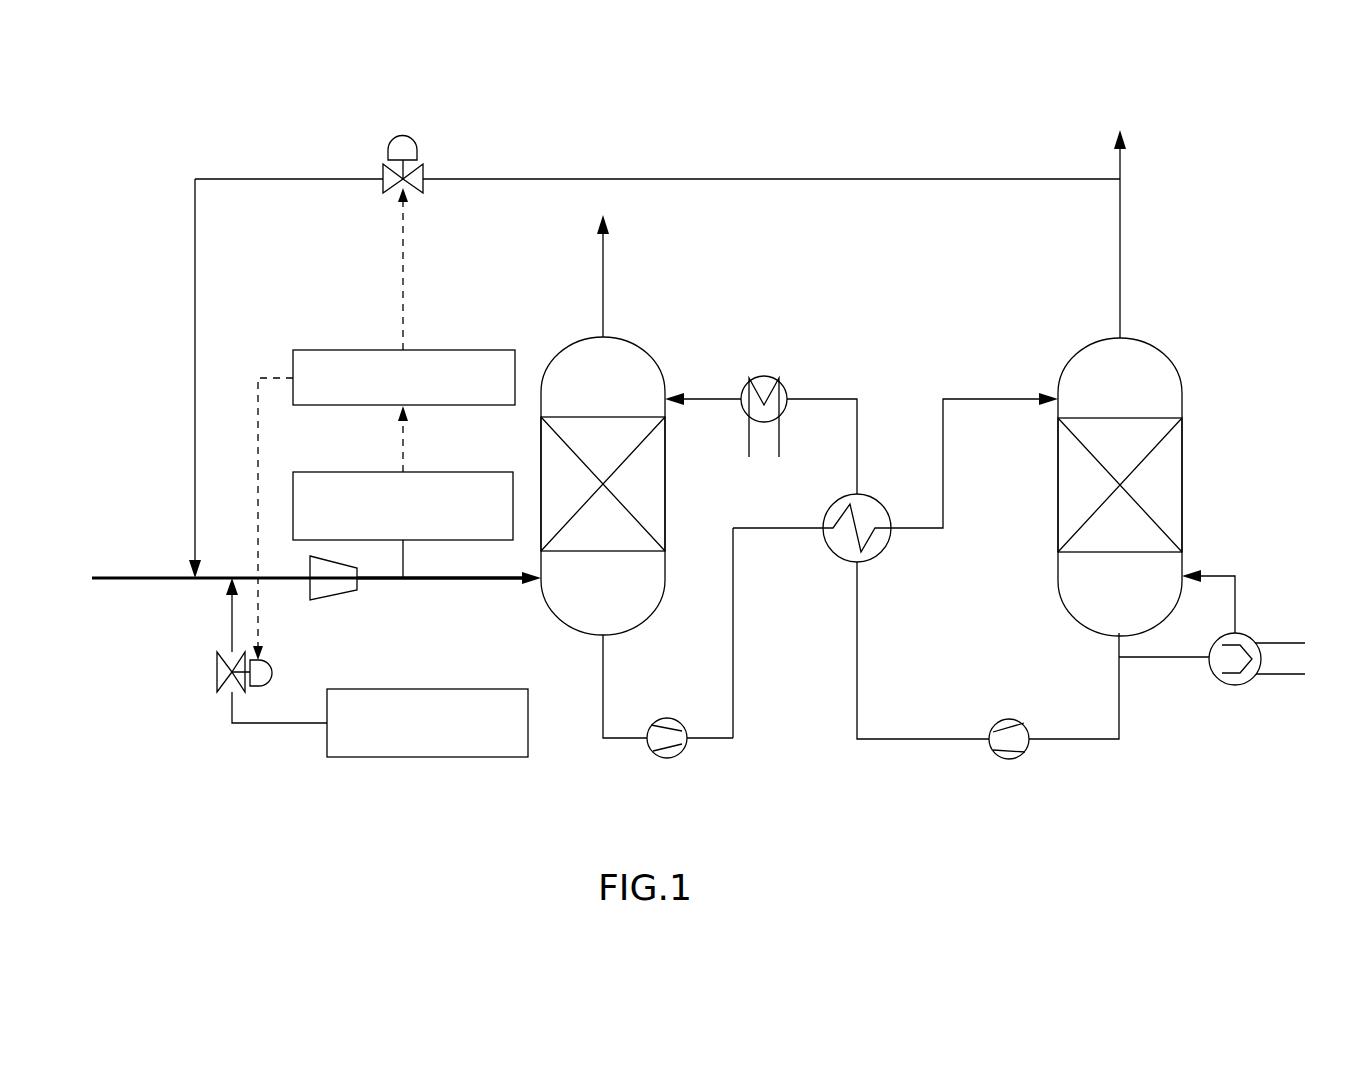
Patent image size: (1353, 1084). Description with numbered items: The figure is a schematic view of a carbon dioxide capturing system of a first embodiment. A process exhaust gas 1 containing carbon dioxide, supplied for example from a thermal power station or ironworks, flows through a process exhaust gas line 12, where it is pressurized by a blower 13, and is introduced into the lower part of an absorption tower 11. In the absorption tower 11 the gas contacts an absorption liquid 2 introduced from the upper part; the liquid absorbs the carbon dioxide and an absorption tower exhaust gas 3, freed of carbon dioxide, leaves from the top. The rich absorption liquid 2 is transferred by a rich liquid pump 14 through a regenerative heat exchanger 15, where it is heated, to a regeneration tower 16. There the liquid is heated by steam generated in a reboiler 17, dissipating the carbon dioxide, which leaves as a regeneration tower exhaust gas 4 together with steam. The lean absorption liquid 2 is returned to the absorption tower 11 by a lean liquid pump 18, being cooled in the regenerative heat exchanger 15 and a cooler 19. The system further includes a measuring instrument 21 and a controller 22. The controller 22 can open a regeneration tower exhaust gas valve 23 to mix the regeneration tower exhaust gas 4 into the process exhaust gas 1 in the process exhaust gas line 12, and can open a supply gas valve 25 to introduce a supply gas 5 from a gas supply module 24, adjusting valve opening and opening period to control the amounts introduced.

The process exhaust gas 1 is at (138, 582).
The absorption liquid 2 is at (706, 397).
The absorption tower exhaust gas 3 is at (603, 297).
The regeneration tower exhaust gas 4 is at (1120, 298).
The supply gas 5 is at (262, 725).
The absorption tower 11 is at (665, 490).
The process exhaust gas line 12 is at (500, 583).
The blower 13 is at (357, 583).
The rich liquid pump 14 is at (667, 758).
The regenerative heat exchanger 15 is at (880, 495).
The regeneration tower 16 is at (1182, 404).
The reboiler 17 is at (1257, 637).
The lean liquid pump 18 is at (1009, 759).
The cooler 19 is at (767, 377).
The measuring instrument 21 is at (359, 472).
The controller 22 is at (353, 350).
The regeneration tower exhaust gas valve 23 is at (417, 150).
The gas supply module 24 is at (420, 757).
The supply gas valve 25 is at (272, 670).